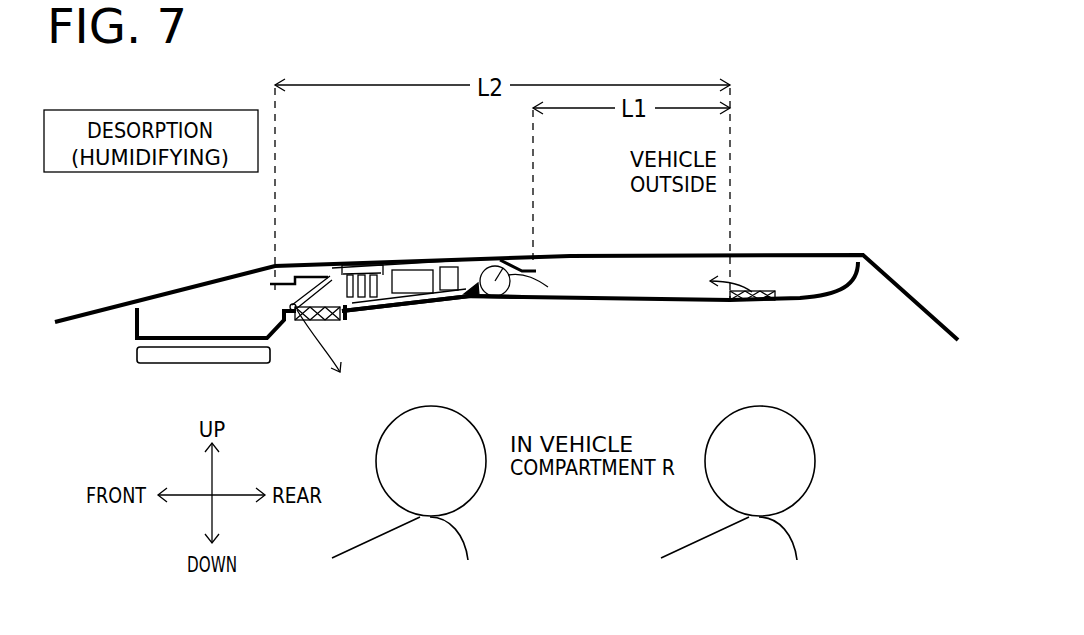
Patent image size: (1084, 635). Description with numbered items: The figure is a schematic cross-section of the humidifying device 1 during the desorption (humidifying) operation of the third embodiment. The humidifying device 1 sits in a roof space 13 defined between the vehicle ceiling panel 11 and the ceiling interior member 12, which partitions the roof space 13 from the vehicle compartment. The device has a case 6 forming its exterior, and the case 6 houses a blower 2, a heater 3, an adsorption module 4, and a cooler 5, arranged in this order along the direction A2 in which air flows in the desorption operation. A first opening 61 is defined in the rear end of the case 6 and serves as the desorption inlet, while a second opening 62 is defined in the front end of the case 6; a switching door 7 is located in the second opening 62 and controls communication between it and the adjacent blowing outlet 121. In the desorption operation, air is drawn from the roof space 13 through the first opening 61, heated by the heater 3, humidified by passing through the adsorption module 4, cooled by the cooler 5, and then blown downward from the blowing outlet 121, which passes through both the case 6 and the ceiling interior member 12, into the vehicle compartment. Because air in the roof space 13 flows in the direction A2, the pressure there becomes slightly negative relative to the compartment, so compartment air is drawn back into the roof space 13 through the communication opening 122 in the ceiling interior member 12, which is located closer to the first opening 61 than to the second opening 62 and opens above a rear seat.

The humidifying device 1 is at (414, 315).
The blower 2 is at (505, 263).
The heater 3 is at (460, 263).
The adsorption module 4 is at (420, 266).
The cooler 5 is at (375, 266).
The case 6 is at (340, 265).
The switching door 7 is at (310, 265).
The vehicle ceiling panel 11 is at (567, 255).
The ceiling interior member 12 is at (562, 303).
The roof space 13 is at (604, 268).
The first opening 61 is at (518, 305).
The second opening 62 is at (272, 293).
The blowing outlet 121 is at (300, 325).
The communication opening 122 is at (740, 302).
The direction of air flow in desorption operation A2 is at (476, 278).